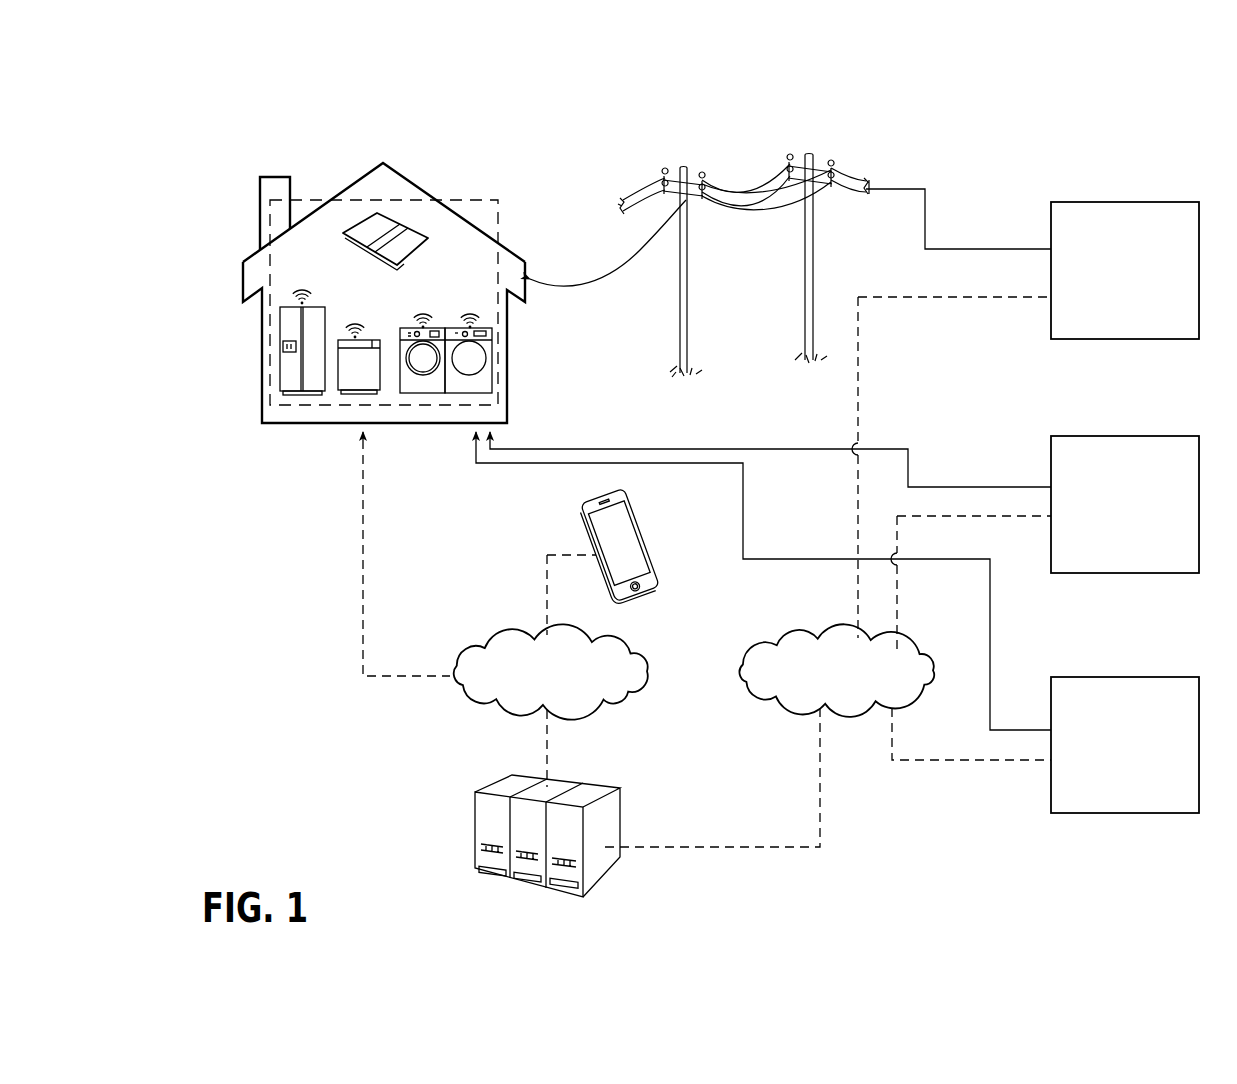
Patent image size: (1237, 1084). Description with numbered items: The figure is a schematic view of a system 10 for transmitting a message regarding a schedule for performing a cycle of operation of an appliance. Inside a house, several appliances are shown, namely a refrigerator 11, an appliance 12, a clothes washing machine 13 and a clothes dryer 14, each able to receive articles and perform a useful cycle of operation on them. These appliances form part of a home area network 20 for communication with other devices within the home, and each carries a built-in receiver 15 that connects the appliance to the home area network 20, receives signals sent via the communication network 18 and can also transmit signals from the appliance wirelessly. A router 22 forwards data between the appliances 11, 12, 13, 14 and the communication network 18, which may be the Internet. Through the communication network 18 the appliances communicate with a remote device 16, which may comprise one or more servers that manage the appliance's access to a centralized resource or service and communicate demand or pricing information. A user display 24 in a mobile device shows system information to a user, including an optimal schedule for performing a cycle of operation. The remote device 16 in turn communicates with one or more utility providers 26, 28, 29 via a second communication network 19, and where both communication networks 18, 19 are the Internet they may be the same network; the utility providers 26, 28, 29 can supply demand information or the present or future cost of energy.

The system 10 is at (194, 183).
The refrigerator 11 is at (298, 397).
The appliance 12 is at (352, 397).
The clothes washing machine 13 is at (494, 378).
The clothes dryer 14 is at (427, 397).
The receiver 15 is at (354, 334).
The remote device 16 is at (627, 812).
The communication network 18 is at (539, 680).
The communication network 19 is at (827, 682).
The home area network 20 is at (311, 196).
The router 22 is at (399, 221).
The user display 24 is at (591, 493).
The utility provider 26 is at (1124, 282).
The utility provider 28 is at (1124, 513).
The utility provider 29 is at (1124, 754).